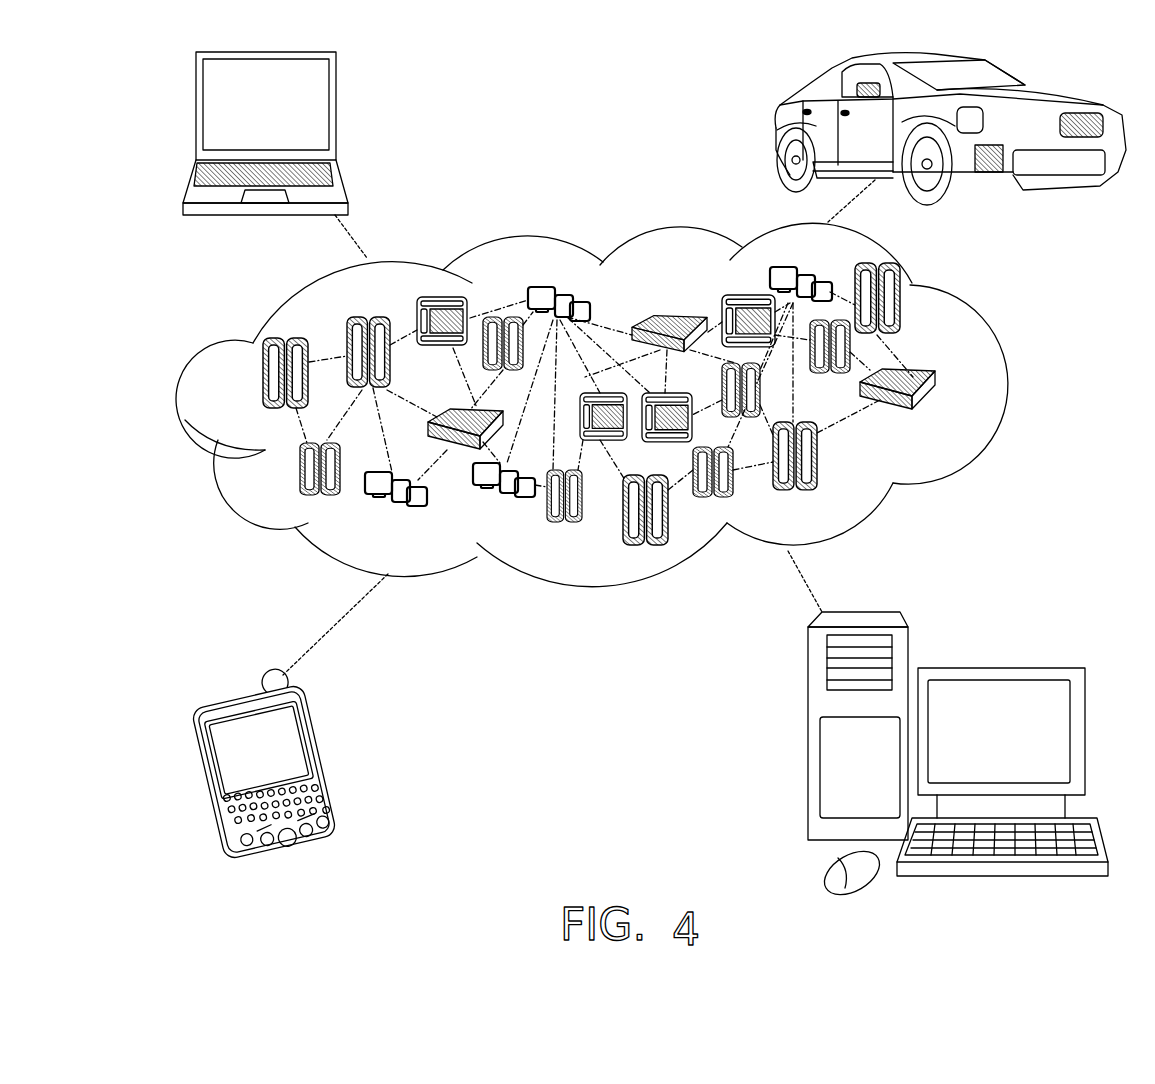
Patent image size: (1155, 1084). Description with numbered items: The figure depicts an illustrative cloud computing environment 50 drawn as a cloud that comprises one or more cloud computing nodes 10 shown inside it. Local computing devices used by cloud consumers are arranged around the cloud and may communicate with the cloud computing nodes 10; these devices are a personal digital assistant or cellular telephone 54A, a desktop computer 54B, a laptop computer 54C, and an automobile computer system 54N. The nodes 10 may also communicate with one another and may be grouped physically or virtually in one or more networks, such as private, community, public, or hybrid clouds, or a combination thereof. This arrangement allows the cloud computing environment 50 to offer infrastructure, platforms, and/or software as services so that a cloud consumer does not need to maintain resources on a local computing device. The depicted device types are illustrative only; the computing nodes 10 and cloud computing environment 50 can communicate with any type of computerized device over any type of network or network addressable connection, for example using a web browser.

The cloud computing environment 50 is at (613, 404).
The cloud computing node 10 is at (946, 414).
The personal digital assistant or cellular telephone 54A is at (290, 762).
The desktop computer 54B is at (958, 758).
The laptop computer 54C is at (294, 133).
The automobile computer system 54N is at (912, 129).